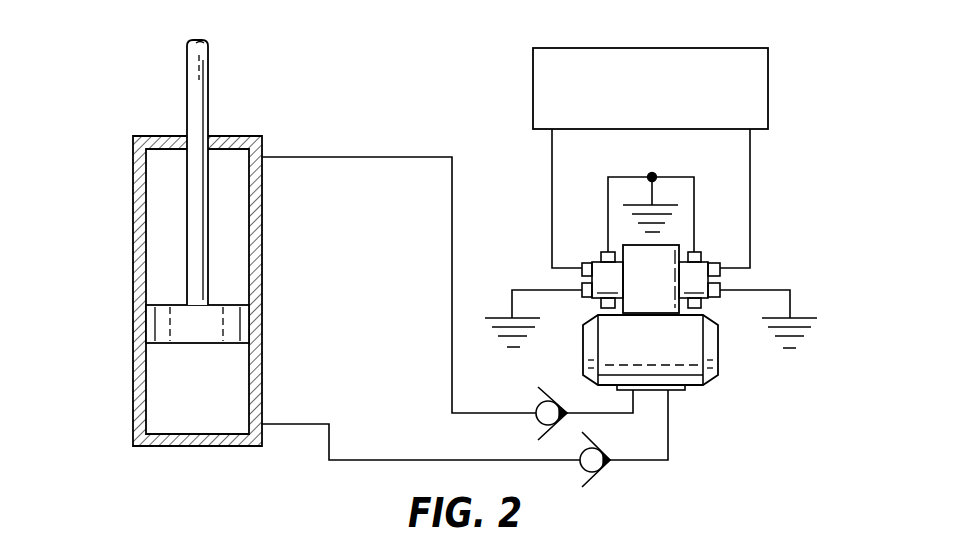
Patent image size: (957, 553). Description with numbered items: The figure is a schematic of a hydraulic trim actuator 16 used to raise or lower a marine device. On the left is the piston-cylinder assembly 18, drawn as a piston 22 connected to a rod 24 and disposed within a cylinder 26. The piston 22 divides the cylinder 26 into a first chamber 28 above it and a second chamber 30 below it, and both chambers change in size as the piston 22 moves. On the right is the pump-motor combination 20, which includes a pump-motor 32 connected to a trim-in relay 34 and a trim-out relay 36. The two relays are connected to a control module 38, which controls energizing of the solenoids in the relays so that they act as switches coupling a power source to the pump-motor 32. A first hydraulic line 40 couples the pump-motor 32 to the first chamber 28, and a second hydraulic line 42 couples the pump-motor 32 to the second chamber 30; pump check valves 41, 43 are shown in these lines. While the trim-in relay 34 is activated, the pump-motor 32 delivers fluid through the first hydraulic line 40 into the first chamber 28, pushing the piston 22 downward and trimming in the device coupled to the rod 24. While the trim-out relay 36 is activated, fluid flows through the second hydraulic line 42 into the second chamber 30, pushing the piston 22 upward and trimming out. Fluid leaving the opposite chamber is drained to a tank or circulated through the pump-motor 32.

The hydraulic trim actuator 16 is at (435, 83).
The piston-cylinder assembly 18 is at (118, 307).
The pump-motor combination 20 is at (733, 377).
The piston 22 is at (231, 325).
The rod 24 is at (185, 100).
The cylinder 26 is at (255, 253).
The first chamber 28 is at (226, 203).
The second chamber 30 is at (230, 389).
The pump-motor 32 is at (693, 371).
The trim-in relay 34 is at (608, 276).
The trim-out relay 36 is at (695, 280).
The control module 38 is at (768, 96).
The first hydraulic line 40 is at (362, 156).
The pump check valve 41 is at (538, 401).
The second hydraulic line 42 is at (330, 442).
The pump check valve 43 is at (603, 471).